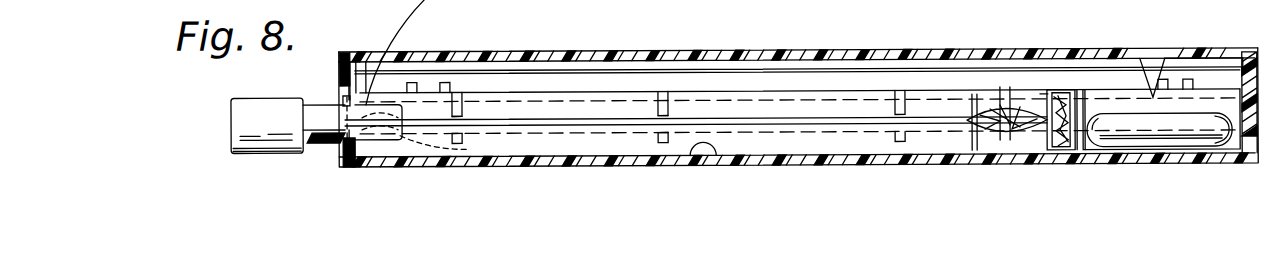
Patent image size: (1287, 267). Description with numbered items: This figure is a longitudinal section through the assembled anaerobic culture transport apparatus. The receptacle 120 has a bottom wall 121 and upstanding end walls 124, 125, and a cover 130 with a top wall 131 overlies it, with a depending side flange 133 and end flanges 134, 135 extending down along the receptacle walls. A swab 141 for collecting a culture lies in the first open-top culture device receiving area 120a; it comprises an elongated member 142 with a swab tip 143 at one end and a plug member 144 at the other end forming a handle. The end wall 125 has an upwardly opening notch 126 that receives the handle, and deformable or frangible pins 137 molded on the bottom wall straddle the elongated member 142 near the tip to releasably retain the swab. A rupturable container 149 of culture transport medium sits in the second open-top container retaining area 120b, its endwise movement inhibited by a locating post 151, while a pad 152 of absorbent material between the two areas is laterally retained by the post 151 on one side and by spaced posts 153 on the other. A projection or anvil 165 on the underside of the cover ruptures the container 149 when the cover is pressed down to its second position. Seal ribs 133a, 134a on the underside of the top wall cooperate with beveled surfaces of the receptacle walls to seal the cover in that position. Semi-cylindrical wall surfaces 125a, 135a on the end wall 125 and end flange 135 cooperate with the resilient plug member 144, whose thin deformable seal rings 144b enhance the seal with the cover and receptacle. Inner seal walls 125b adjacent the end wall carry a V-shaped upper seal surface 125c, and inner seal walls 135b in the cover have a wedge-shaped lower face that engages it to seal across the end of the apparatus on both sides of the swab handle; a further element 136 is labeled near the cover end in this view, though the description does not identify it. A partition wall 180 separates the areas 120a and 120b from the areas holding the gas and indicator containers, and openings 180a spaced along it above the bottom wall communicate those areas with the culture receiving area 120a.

The receptacle 120 is at (826, 169).
The first open-top culture device receiving area 120a is at (722, 165).
The second open-top container retaining area 120b is at (1120, 142).
The bottom wall 121 is at (570, 168).
The end wall 124 is at (1252, 147).
The end wall 125 is at (347, 152).
The semi-cylindrical wall surface 125a is at (340, 134).
The inner seal walls 125b is at (390, 150).
The V-shaped upper seal surface 125c is at (458, 143).
The upwardly opening notch 126 is at (378, 160).
The cover 130 is at (826, 43).
The top wall 131 is at (898, 52).
The side flange 133 is at (648, 81).
The seal rib 133a is at (968, 74).
The end flange 134 is at (1258, 73).
The seal rib 134a is at (1240, 74).
The end flange 135 is at (340, 72).
The semi-cylindrical wall surface 135a is at (343, 100).
The inner seal walls 135b is at (373, 72).
The retaining member 136 is at (372, 106).
The deformable or frangible pins 137 is at (973, 110).
The swab 141 is at (768, 118).
The elongated member 142 is at (572, 121).
The swab tip 143 is at (1023, 158).
The plug member 144 is at (268, 140).
The deformable seal rings 144b is at (340, 104).
The rupturable container 149 is at (1163, 145).
The locating post 151 is at (1065, 152).
The pad of absorbent material 152 is at (1048, 162).
The spaced posts 153 is at (1042, 98).
The projection or anvil 165 is at (1151, 99).
The partition wall 180 is at (550, 111).
The openings 180a is at (461, 109).